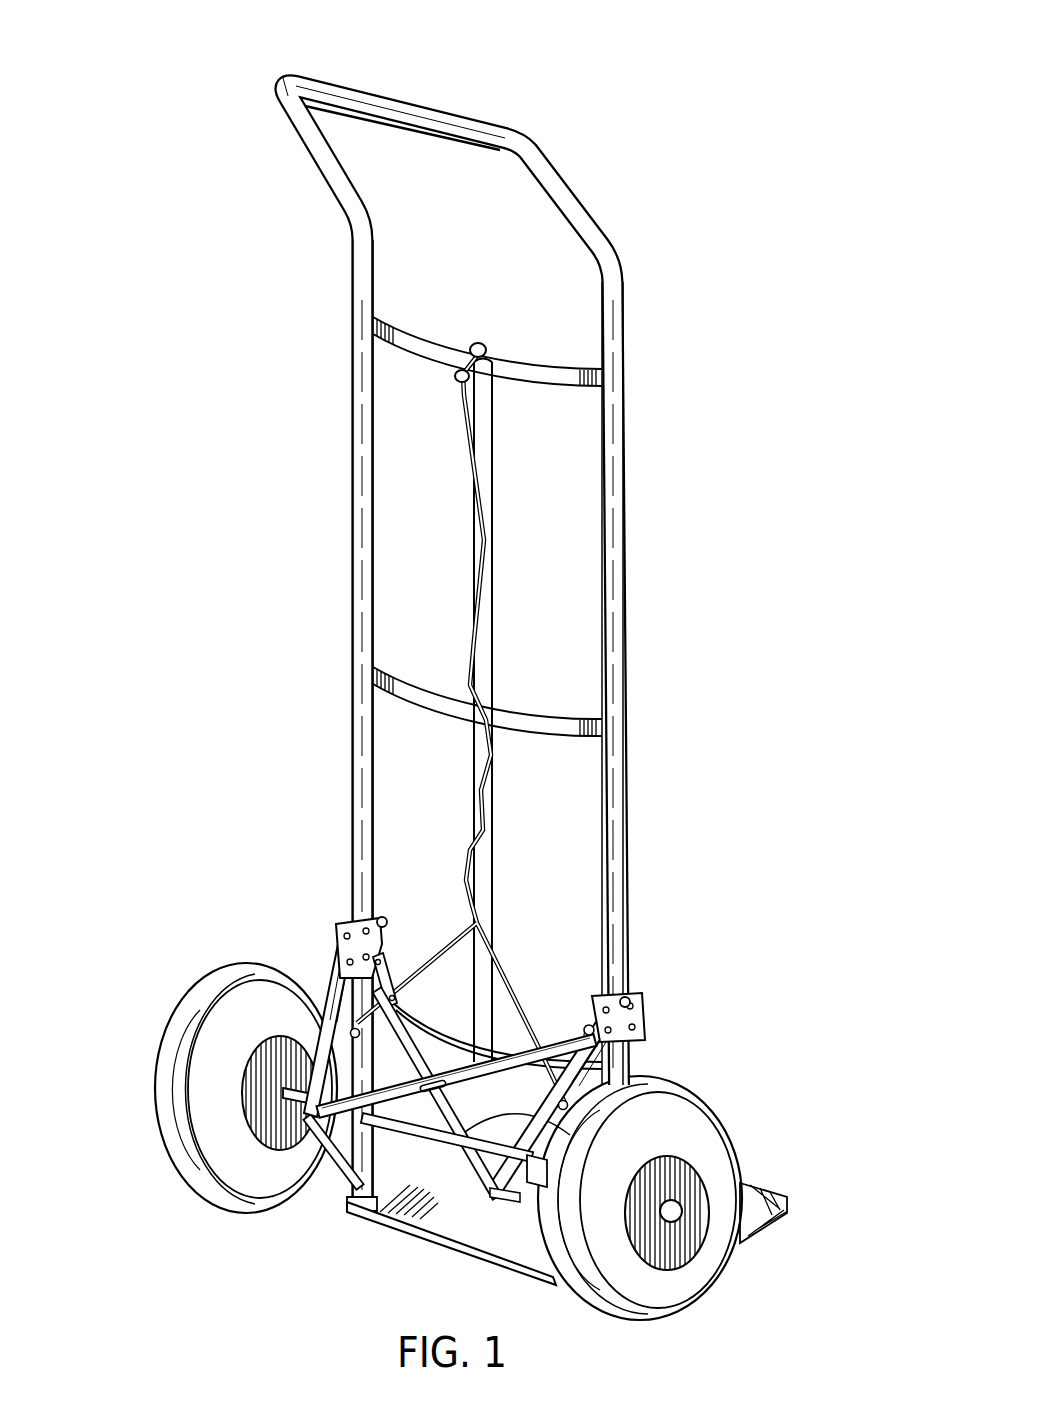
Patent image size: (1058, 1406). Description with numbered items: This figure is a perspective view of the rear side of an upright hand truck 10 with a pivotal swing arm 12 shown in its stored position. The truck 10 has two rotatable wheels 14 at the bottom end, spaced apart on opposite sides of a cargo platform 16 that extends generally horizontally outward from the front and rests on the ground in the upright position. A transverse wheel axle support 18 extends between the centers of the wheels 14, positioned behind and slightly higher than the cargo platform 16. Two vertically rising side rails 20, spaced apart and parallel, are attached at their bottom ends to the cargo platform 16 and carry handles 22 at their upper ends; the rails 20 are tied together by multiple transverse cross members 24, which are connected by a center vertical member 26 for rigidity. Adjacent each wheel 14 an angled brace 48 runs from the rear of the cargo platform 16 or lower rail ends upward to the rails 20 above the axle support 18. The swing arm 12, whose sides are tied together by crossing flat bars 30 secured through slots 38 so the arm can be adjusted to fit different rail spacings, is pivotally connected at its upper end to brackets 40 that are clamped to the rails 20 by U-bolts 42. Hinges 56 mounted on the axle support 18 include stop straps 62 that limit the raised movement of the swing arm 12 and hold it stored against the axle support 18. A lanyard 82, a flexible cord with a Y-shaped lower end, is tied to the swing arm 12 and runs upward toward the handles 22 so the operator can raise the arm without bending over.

The upright hand truck 10 is at (598, 190).
The swing arm 12 is at (493, 1190).
The wheels 14 is at (200, 990).
The cargo platform 16 is at (770, 1223).
The wheel axle support 18 is at (432, 1143).
The side rails 20 is at (350, 417).
The handles 22 is at (402, 100).
The cross members 24 is at (430, 345).
The center vertical member 26 is at (490, 592).
The flat bars 30 is at (470, 1067).
The slots 38 is at (387, 963).
The brackets 40 is at (340, 923).
The U-bolts 42 is at (382, 922).
The angled brace 48 is at (320, 1150).
The hinges 56 is at (550, 1133).
The stop strap 62 is at (573, 1023).
The lanyard 82 is at (480, 343).